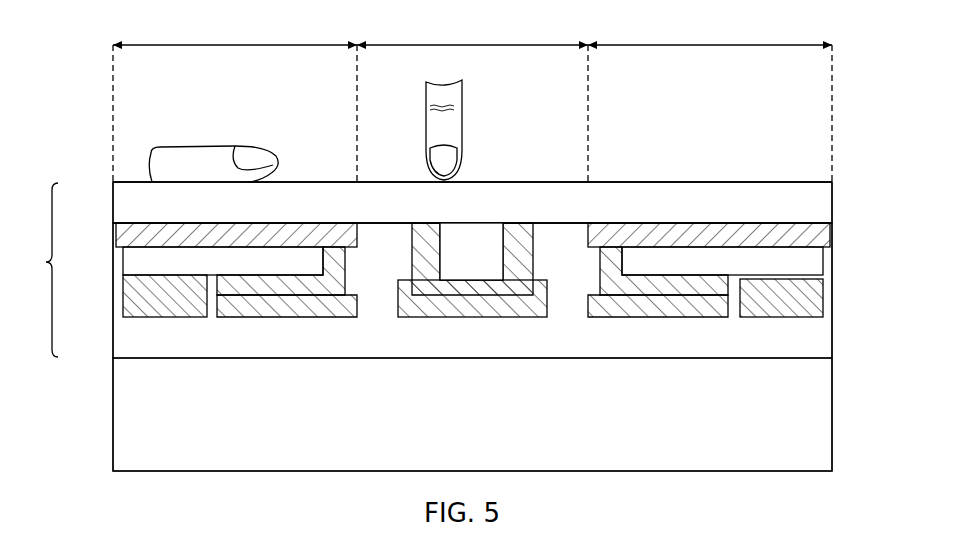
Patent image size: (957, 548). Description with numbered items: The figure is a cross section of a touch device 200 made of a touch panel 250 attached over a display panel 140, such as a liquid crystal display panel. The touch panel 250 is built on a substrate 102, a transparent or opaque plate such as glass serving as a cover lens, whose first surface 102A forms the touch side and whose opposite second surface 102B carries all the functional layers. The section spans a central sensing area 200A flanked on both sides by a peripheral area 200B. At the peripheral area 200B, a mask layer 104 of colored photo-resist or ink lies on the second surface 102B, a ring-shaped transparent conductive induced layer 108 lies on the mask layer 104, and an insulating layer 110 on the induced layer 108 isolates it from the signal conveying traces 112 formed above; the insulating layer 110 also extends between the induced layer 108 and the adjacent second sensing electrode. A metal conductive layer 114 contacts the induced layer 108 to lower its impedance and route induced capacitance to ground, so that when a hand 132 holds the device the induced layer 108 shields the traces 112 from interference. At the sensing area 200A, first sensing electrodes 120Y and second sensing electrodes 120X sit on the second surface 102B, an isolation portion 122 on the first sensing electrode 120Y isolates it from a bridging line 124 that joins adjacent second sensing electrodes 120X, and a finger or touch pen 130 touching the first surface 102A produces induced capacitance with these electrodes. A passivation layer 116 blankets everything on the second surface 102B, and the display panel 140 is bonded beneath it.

The touch device 200 is at (858, 113).
The sensing area 200A is at (472, 102).
The peripheral area 200B is at (472, 102).
The substrate 102 is at (824, 203).
The first surface 102A is at (806, 181).
The second surface 102B is at (806, 224).
The mask layer 104 is at (122, 238).
The induced layer 108 is at (133, 262).
The insulating layer 110 is at (254, 290).
The signal conveying traces 112 is at (302, 310).
The conductive layer 114 is at (123, 298).
The passivation layer 116 is at (824, 338).
The second sensing electrodes 120X is at (386, 232).
The first sensing electrodes 120Y is at (480, 235).
The isolation portion 122 is at (428, 290).
The bridging line 124 is at (491, 310).
The touch pen 130 is at (464, 93).
The hand 132 is at (197, 146).
The display panel 140 is at (824, 415).
The touch panel 250 is at (35, 270).